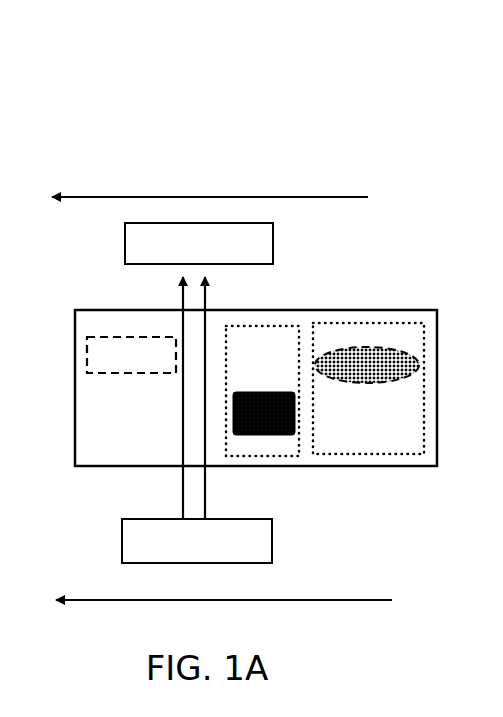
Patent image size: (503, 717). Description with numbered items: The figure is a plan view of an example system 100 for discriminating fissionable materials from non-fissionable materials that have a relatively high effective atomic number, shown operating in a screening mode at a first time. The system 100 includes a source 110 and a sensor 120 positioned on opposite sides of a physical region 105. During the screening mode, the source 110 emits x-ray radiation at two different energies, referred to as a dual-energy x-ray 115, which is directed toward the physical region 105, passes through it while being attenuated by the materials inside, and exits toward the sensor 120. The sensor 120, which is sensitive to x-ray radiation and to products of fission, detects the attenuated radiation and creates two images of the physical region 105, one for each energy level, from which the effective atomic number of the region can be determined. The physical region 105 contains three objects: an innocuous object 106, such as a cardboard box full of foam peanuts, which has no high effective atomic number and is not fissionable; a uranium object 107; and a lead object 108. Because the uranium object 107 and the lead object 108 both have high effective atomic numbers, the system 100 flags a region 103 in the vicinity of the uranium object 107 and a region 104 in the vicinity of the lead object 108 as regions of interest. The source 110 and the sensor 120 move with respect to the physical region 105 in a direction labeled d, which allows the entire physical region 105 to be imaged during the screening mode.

The system 100 is at (239, 42).
The region of interest 103 is at (292, 323).
The region of interest 104 is at (337, 323).
The physical region 105 is at (405, 292).
The object 106 is at (131, 355).
The uranium object 107 is at (254, 392).
The lead object 108 is at (367, 365).
The source 110 is at (197, 541).
The dual-energy x-ray 115 is at (174, 398).
The sensor 120 is at (199, 243).